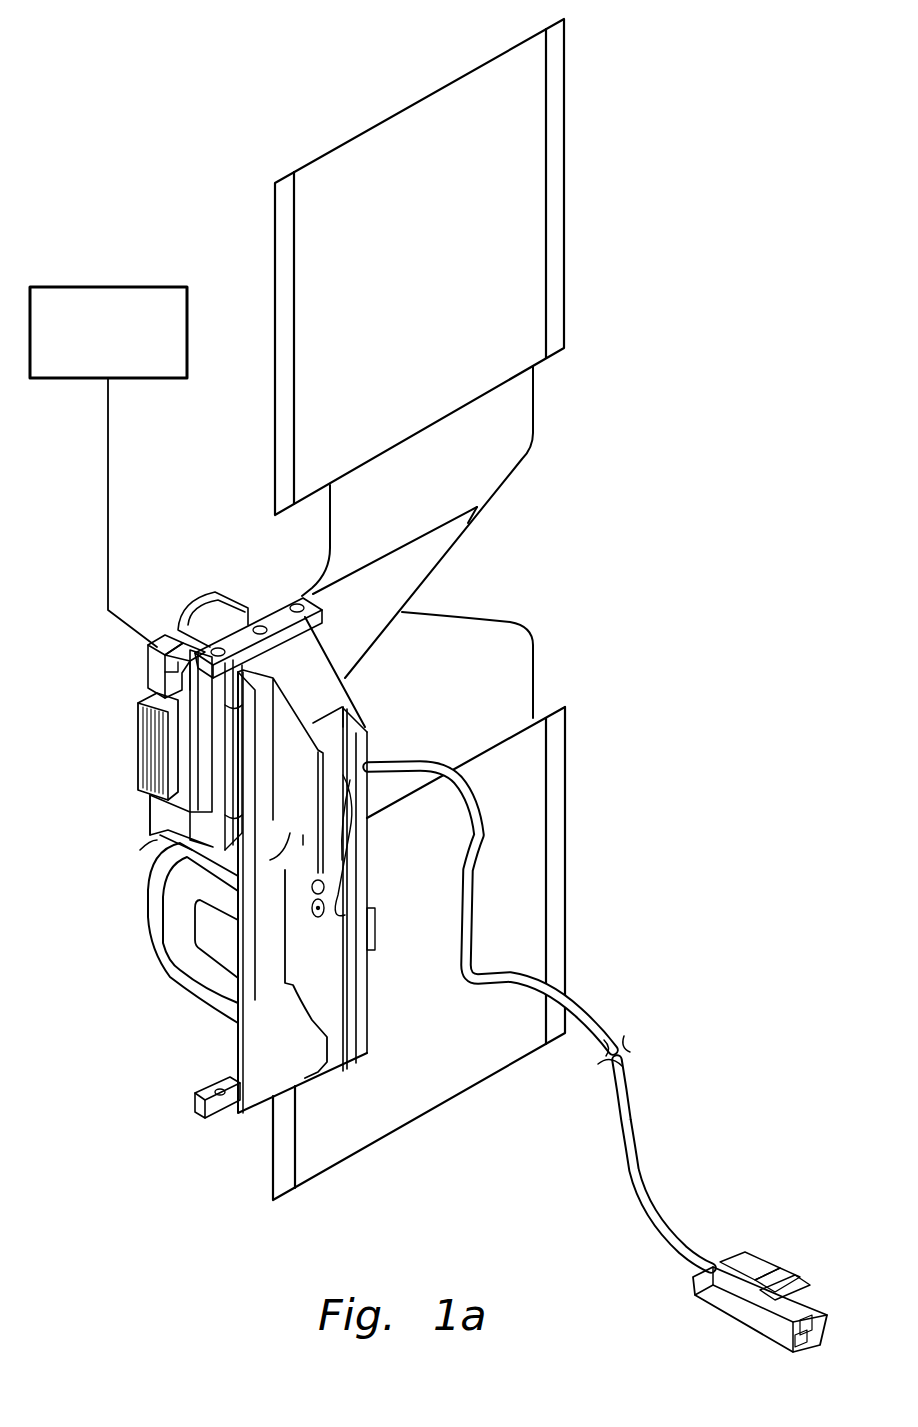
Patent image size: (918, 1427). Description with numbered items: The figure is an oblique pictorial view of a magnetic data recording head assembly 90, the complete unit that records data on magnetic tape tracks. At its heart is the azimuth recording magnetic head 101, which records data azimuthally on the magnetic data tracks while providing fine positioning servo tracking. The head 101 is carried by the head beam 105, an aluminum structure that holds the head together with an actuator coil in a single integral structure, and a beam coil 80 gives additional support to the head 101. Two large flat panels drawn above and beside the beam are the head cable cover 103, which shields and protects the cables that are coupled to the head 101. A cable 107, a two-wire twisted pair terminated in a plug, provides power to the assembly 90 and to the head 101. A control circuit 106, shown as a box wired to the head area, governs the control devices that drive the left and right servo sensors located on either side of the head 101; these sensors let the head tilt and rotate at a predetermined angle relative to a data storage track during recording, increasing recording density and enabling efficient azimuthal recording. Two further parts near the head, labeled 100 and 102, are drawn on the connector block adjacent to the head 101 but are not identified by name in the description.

The beam coil 80 is at (255, 1103).
The magnetic data recording head assembly 90 is at (165, 192).
The connector block 100 is at (143, 693).
The azimuth recording magnetic head 101 is at (95, 750).
The lower connector block 102 is at (183, 795).
The head cable cover 103 is at (533, 282).
The head beam 105 is at (668, 805).
The control circuit 106 is at (90, 287).
The cable 107 is at (647, 1193).